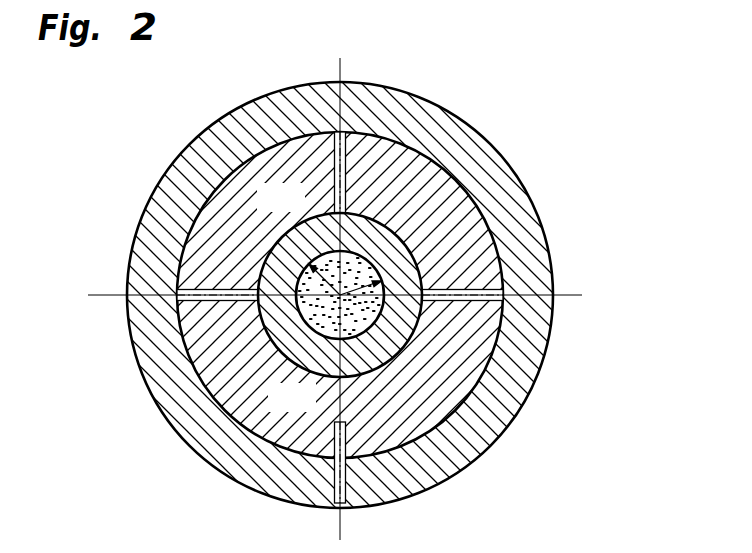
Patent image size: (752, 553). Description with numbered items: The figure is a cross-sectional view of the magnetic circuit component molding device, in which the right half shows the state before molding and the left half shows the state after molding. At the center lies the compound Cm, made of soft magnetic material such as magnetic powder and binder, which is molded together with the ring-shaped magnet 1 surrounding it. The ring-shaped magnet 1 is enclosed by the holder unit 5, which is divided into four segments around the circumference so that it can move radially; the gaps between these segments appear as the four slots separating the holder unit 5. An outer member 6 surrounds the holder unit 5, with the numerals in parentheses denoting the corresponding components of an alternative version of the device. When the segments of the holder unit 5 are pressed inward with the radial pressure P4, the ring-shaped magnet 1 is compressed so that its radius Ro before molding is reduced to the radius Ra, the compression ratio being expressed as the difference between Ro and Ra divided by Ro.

The ring-shaped magnet 1 is at (380, 362).
The holder unit 5 is at (482, 357).
The outer member (37) 6 is at (543, 305).
The compound Cm is at (358, 257).
The radius after molding Ra is at (297, 280).
The radius before molding Ro is at (382, 281).
The radial pressure P4 is at (282, 235).